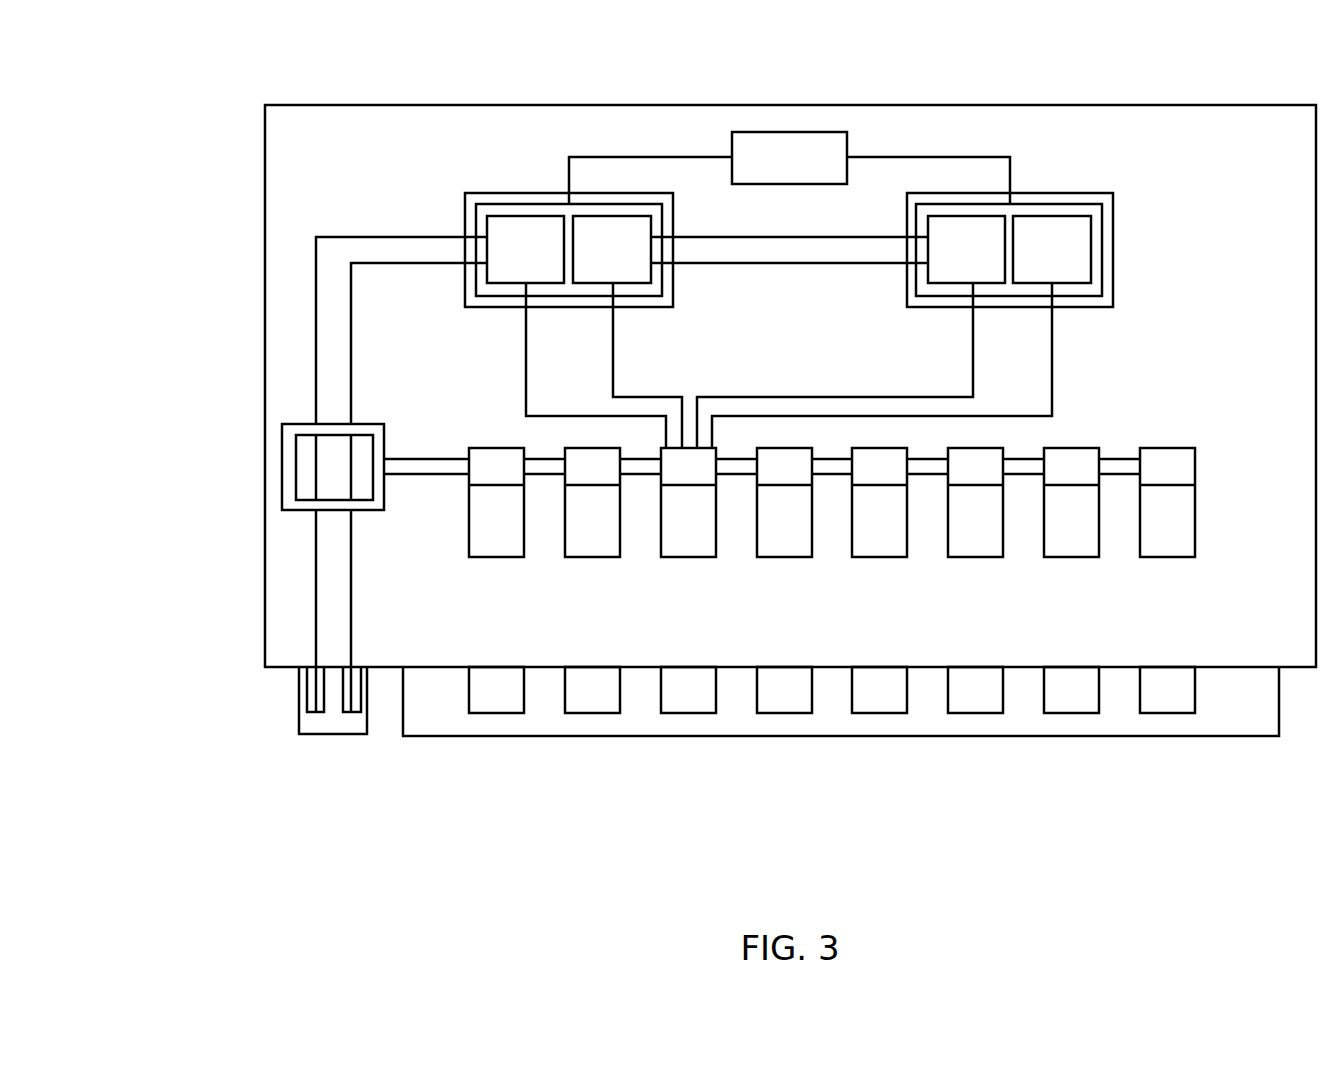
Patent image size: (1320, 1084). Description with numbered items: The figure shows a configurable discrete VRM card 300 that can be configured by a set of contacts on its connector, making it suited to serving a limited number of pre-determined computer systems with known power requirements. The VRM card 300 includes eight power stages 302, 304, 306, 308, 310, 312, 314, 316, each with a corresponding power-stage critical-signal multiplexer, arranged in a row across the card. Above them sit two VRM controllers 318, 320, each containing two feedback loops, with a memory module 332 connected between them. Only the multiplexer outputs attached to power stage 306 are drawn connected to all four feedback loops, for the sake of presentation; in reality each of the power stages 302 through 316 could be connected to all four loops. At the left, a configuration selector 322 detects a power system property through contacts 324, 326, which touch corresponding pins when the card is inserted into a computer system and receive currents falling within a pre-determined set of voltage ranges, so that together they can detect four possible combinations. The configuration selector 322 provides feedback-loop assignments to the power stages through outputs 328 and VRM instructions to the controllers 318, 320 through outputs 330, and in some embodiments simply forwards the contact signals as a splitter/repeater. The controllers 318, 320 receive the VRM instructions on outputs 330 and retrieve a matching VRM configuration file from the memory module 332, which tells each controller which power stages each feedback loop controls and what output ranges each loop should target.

The configurable discrete VRM card 300 is at (205, 101).
The power stage 302 is at (500, 540).
The power stage 304 is at (596, 540).
The power stage 306 is at (692, 540).
The power stage 308 is at (788, 540).
The power stage 310 is at (883, 540).
The power stage 312 is at (979, 540).
The power stage 314 is at (1075, 540).
The power stage 316 is at (1168, 540).
The VRM controller 318 is at (483, 215).
The VRM controller 320 is at (1095, 212).
The configuration selector 322 is at (373, 435).
The contact 324 is at (313, 703).
The contact 326 is at (349, 703).
The outputs 328 is at (452, 497).
The outputs 330 is at (378, 298).
The memory module 332 is at (832, 162).